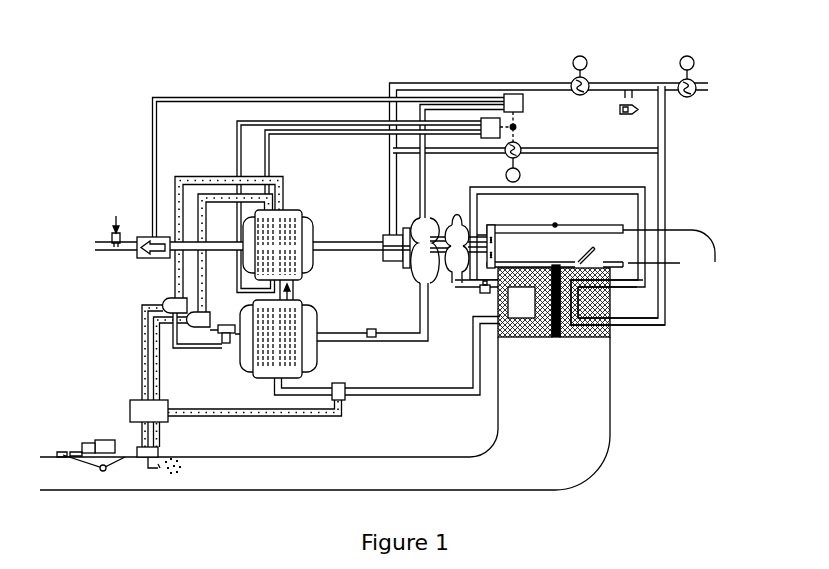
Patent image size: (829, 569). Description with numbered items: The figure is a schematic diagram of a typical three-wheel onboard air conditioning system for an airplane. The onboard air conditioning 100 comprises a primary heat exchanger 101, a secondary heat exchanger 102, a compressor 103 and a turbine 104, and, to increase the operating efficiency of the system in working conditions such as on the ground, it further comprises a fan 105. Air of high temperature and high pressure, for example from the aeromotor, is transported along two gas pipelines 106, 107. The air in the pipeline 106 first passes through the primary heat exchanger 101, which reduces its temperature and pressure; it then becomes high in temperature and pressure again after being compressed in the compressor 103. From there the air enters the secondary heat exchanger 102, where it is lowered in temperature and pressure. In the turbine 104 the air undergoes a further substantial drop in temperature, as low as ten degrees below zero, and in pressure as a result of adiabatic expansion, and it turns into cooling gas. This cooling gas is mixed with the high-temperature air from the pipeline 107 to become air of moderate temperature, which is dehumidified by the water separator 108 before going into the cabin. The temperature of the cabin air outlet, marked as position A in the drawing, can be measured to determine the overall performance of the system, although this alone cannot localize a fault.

The onboard air conditioning 100 is at (714, 42).
The primary heat exchanger 101 is at (593, 340).
The secondary heat exchanger 102 is at (507, 340).
The compressor 103 is at (453, 283).
The turbine 104 is at (429, 220).
The fan 105 is at (494, 238).
The gas pipeline 106 is at (660, 193).
The gas pipeline 107 is at (591, 150).
The water separator 108 is at (314, 225).